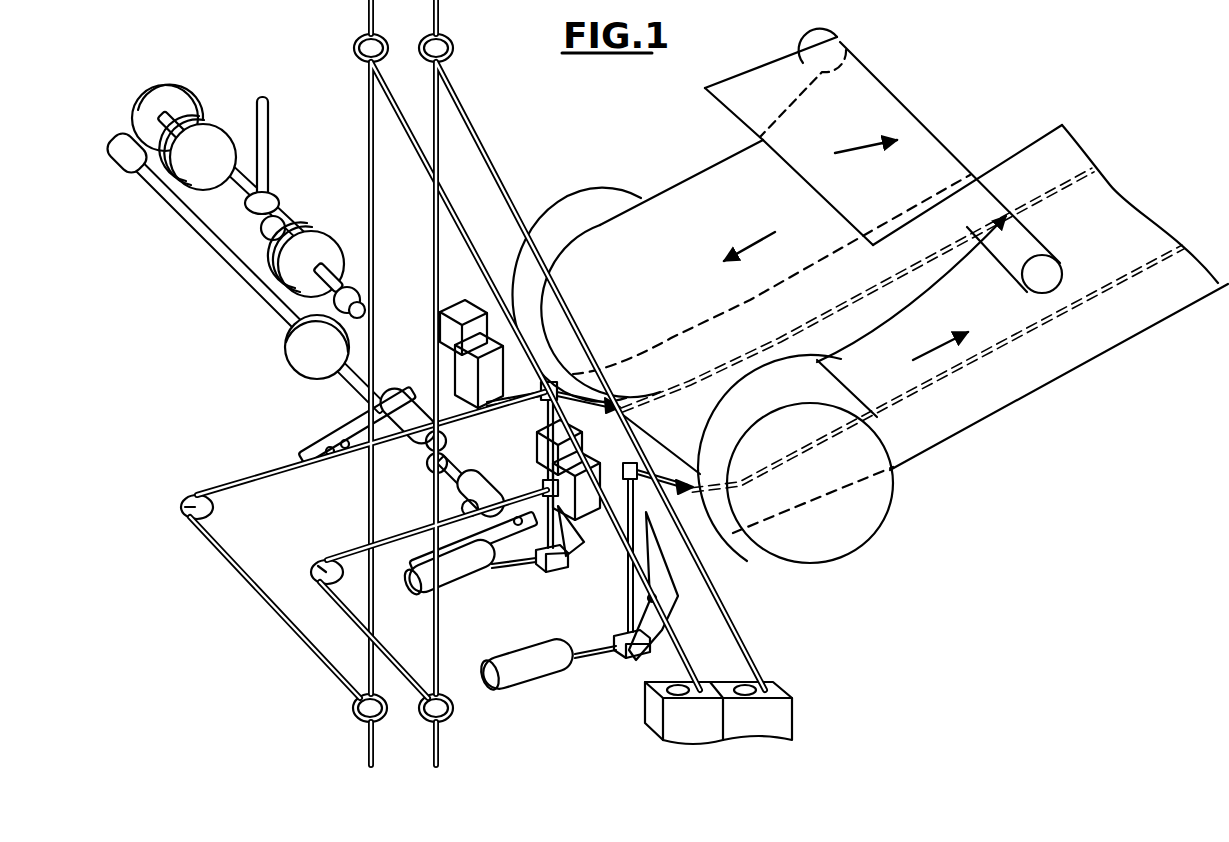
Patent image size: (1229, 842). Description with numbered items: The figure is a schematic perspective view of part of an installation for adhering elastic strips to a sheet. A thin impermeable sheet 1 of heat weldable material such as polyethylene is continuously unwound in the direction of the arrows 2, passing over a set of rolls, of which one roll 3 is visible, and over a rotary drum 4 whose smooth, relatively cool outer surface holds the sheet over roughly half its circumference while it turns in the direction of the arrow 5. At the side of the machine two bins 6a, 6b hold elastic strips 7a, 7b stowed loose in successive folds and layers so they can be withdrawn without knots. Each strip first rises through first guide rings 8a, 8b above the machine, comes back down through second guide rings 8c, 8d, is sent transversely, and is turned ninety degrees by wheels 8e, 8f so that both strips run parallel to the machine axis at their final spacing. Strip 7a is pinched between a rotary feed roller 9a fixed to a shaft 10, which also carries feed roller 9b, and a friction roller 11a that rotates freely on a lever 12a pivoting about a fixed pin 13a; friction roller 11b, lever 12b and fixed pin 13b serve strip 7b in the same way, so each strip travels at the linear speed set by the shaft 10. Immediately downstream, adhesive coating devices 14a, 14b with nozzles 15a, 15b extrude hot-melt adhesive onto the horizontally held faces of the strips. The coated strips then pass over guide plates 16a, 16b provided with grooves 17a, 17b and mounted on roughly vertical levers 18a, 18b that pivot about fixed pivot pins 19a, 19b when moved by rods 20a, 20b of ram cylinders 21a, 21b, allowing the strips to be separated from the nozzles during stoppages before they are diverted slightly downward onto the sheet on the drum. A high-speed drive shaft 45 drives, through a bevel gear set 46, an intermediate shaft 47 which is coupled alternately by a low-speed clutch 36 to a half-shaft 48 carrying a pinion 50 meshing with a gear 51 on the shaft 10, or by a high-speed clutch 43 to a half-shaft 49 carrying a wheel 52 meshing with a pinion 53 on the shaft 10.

The thin impermeable sheet 1 is at (706, 196).
The arrows 2 is at (846, 243).
The roll 3 is at (820, 48).
The rotary drum 4 is at (600, 200).
The arrow 5 is at (770, 454).
The bin 6a is at (652, 720).
The bin 6b is at (780, 716).
The elastic strip 7a is at (367, 183).
The elastic strip 7b is at (434, 228).
The first guide ring 8a is at (354, 49).
The first guide ring 8b is at (453, 49).
The second guide ring 8c is at (353, 714).
The second guide ring 8d is at (453, 714).
The wheel 8e is at (180, 507).
The wheel 8f is at (314, 566).
The rotary feed roller 9a is at (426, 462).
The feed roller 9b is at (461, 511).
The shaft 10 is at (232, 274).
The friction roller 11a is at (425, 390).
The friction roller 11b is at (506, 470).
The lever 12a is at (342, 436).
The lever 12b is at (485, 580).
The fixed pin 13a is at (320, 450).
The fixed pin 13b is at (458, 565).
The adhesive coating device 14a is at (450, 298).
The adhesive coating device 14b is at (535, 455).
The nozzle 15a is at (541, 384).
The nozzle 15b is at (543, 488).
The guide plate 16a is at (566, 348).
The guide plate 16b is at (634, 462).
The groove 17a is at (588, 352).
The groove 17b is at (643, 470).
The lever 18a is at (570, 562).
The lever 18b is at (636, 611).
The fixed pivot pin 19a is at (578, 540).
The fixed pivot pin 19b is at (658, 600).
The rod 20a is at (506, 570).
The rod 20b is at (592, 656).
The ram cylinder 21a is at (418, 592).
The ram cylinder 21b is at (526, 674).
The low-speed clutch 36 is at (334, 246).
The high-speed clutch 43 is at (226, 132).
The high-speed drive shaft 45 is at (270, 116).
The bevel gear set 46 is at (288, 212).
The intermediate shaft 47 is at (238, 198).
The half-shaft 48 is at (345, 268).
The half-shaft 49 is at (185, 112).
The pinion 50 is at (362, 294).
The gear 51 is at (285, 349).
The wheel 52 is at (160, 96).
The pinion 53 is at (118, 140).